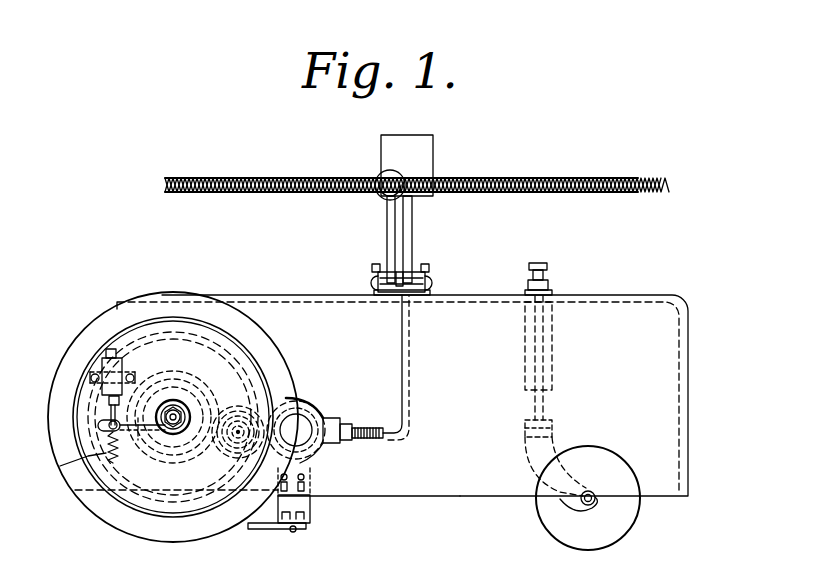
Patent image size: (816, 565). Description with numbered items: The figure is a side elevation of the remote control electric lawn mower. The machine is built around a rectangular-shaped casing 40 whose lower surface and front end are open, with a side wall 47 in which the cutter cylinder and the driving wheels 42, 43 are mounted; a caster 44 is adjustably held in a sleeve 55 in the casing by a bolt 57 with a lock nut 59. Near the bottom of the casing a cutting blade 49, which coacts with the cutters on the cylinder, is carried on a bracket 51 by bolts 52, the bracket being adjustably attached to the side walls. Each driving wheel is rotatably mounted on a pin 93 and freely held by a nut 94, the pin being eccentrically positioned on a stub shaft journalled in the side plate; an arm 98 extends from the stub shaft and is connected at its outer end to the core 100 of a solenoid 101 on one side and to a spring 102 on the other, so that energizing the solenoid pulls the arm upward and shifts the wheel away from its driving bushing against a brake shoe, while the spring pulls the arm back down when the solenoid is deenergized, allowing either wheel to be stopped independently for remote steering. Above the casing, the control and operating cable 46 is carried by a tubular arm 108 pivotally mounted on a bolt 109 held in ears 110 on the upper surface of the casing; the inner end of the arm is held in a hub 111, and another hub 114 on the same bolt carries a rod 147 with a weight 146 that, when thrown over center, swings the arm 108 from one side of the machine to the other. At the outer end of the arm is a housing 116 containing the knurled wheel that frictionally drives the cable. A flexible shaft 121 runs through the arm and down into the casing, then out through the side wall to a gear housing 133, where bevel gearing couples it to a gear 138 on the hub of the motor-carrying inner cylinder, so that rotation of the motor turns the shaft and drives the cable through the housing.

The casing 40 is at (641, 294).
The driving wheel 42 is at (100, 511).
The driving wheel 43 is at (29, 561).
The caster 44 is at (626, 517).
The control and operating cable 46 is at (581, 178).
The side wall 47 is at (459, 497).
The cutting blade 49 is at (275, 529).
The bracket 51 is at (310, 521).
The bolts 52 is at (310, 509).
The sleeve 55 is at (553, 352).
The bolt 57 is at (526, 420).
The lock nut 59 is at (549, 287).
The pin 93 is at (171, 400).
The nut 94 is at (150, 564).
The arm 98 is at (138, 442).
The core 100 is at (122, 410).
The solenoid 101 is at (102, 362).
The spring 102 is at (64, 466).
The arm 108 is at (412, 227).
The bolt 109 is at (366, 282).
The ears 110 is at (427, 268).
The hub 111 is at (432, 291).
The hub 114 is at (387, 268).
The housing 116 is at (430, 153).
The flexible shaft 121 is at (379, 441).
The gear housing 133 is at (340, 421).
The gear 138 is at (234, 407).
The weight 146 is at (377, 195).
The rod 147 is at (388, 231).